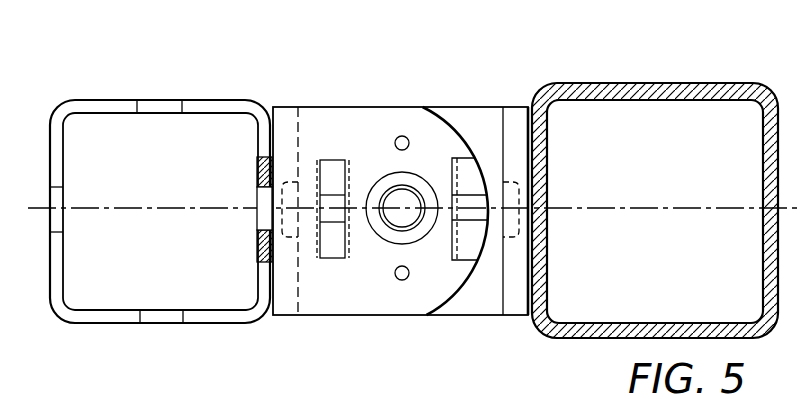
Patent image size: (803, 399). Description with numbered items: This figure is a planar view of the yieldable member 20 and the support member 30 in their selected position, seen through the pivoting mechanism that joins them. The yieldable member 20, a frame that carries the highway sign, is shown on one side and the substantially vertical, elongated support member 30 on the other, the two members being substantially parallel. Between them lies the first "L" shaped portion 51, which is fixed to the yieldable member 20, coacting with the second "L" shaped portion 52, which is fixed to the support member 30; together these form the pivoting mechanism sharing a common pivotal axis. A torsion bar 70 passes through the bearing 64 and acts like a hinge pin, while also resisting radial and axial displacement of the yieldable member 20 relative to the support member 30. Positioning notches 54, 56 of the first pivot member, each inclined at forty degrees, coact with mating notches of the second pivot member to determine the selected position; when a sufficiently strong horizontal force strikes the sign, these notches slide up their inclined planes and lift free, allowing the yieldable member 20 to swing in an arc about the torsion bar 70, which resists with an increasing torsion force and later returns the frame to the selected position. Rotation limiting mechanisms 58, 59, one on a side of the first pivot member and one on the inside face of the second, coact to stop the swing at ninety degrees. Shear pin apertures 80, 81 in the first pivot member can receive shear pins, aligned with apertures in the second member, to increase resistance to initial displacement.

The yieldable member 20 is at (210, 329).
The support member 30 is at (687, 85).
The first "L" shaped portion 51 is at (310, 90).
The second "L" shaped portion 52 is at (470, 298).
The positioning notch 54 is at (471, 215).
The positioning notch 56 is at (332, 198).
The rotation limiting mechanism 58 is at (338, 107).
The rotation limiting mechanism 59 is at (500, 132).
The bearing 64 is at (387, 193).
The torsion bar 70 is at (406, 190).
The shear pin aperture 80 is at (396, 277).
The shear pin aperture 81 is at (398, 137).